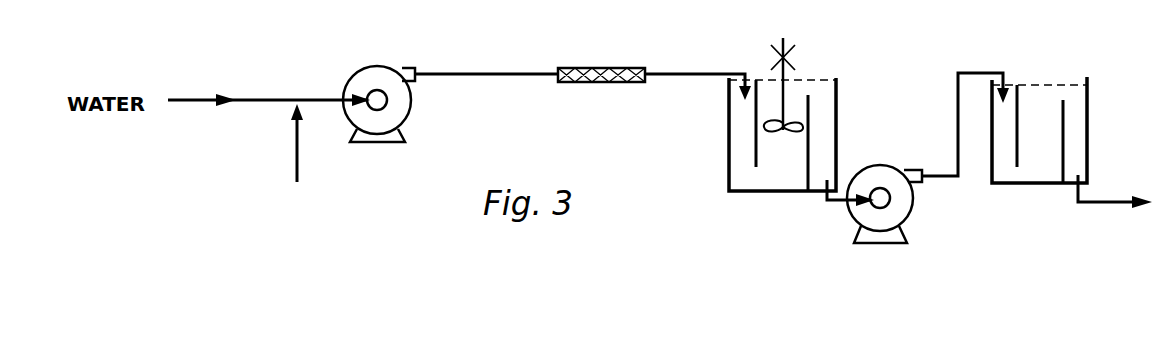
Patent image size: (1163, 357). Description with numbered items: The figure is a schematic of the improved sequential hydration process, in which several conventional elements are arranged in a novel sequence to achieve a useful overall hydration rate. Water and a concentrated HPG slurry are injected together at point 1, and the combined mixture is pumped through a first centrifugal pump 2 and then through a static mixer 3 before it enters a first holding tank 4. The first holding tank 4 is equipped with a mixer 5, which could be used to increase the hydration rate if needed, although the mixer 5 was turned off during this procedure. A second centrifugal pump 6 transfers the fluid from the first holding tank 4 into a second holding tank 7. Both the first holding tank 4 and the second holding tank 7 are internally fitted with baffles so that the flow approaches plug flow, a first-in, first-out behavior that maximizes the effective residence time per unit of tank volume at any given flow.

The injection point 1 is at (297, 93).
The first centrifugal pump 2 is at (368, 66).
The static mixer 3 is at (588, 66).
The first holding tank 4 is at (729, 134).
The mixer 5 is at (785, 96).
The second centrifugal pump 6 is at (880, 166).
The second holding tank 7 is at (1088, 125).